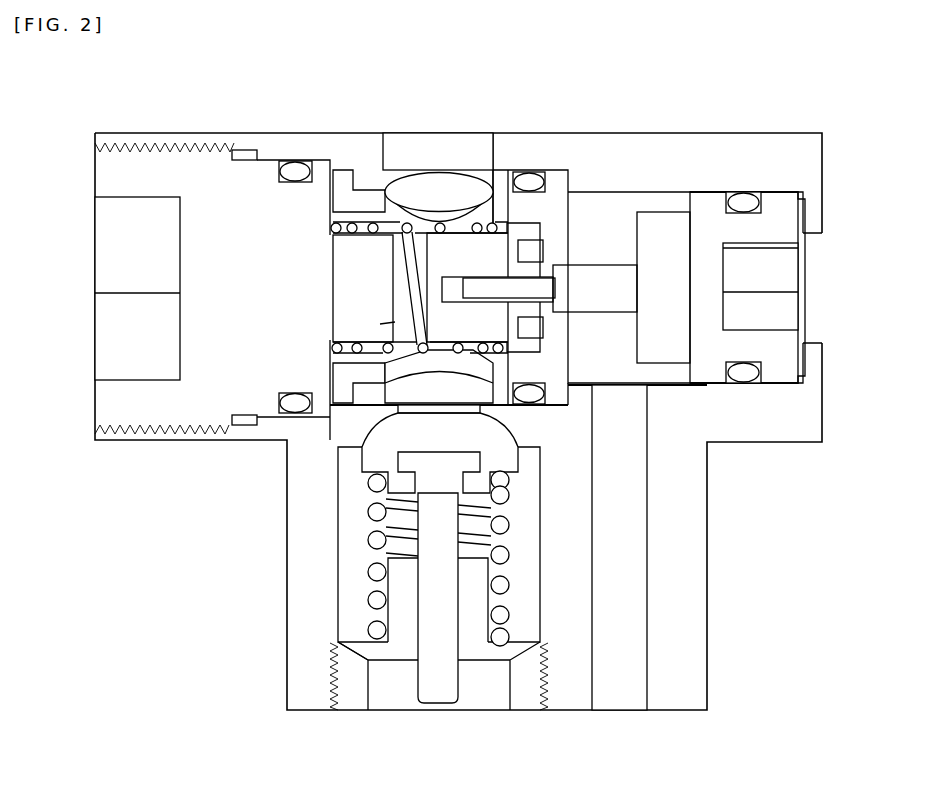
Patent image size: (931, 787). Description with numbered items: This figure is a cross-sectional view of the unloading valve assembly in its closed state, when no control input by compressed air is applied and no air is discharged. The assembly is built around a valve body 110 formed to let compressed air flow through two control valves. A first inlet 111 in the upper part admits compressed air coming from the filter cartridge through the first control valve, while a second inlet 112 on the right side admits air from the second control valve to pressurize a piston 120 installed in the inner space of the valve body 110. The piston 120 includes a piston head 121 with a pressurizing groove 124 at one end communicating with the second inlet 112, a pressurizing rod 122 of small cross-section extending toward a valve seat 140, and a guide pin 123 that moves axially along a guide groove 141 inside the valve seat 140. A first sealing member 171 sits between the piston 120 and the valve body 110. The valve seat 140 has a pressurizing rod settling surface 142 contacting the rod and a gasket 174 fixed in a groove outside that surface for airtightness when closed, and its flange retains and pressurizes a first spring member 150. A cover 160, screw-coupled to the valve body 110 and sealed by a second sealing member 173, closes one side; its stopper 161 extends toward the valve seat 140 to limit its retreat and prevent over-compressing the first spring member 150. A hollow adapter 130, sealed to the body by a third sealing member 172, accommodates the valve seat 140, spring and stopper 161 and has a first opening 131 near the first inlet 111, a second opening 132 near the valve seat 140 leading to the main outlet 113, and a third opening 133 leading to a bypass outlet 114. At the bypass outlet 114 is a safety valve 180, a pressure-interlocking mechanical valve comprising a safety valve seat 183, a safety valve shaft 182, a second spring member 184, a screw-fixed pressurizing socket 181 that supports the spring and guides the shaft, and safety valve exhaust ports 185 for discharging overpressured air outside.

The valve body 110 is at (812, 211).
The first inlet 111 is at (462, 146).
The second inlet 112 is at (815, 246).
The main outlet 113 is at (622, 512).
The bypass outlet 114 is at (448, 417).
The piston 120 is at (800, 350).
The piston head 121 is at (782, 198).
The pressurizing rod 122 is at (607, 268).
The guide pin 123 is at (494, 226).
The pressurizing groove 124 is at (773, 330).
The hollow adapter 130 is at (373, 188).
The first opening 131 is at (403, 212).
The second opening 132 is at (535, 393).
The third opening 133 is at (402, 368).
The valve seat 140 is at (420, 313).
The guide groove 141 is at (447, 288).
The pressurizing rod settling surface 142 is at (554, 278).
The first spring member 150 is at (348, 218).
The cover 160 is at (124, 178).
The stopper 161 is at (395, 322).
The first sealing member 171 is at (743, 200).
The third sealing member 172 is at (567, 400).
The second sealing member 173 is at (297, 165).
The gasket 174 is at (546, 180).
The safety valve 180 is at (280, 560).
The pressurizing socket 181 is at (353, 693).
The safety valve shaft 182 is at (437, 685).
The safety valve seat 183 is at (377, 462).
The second spring member 184 is at (370, 600).
The safety valve exhaust port 185 is at (520, 660).